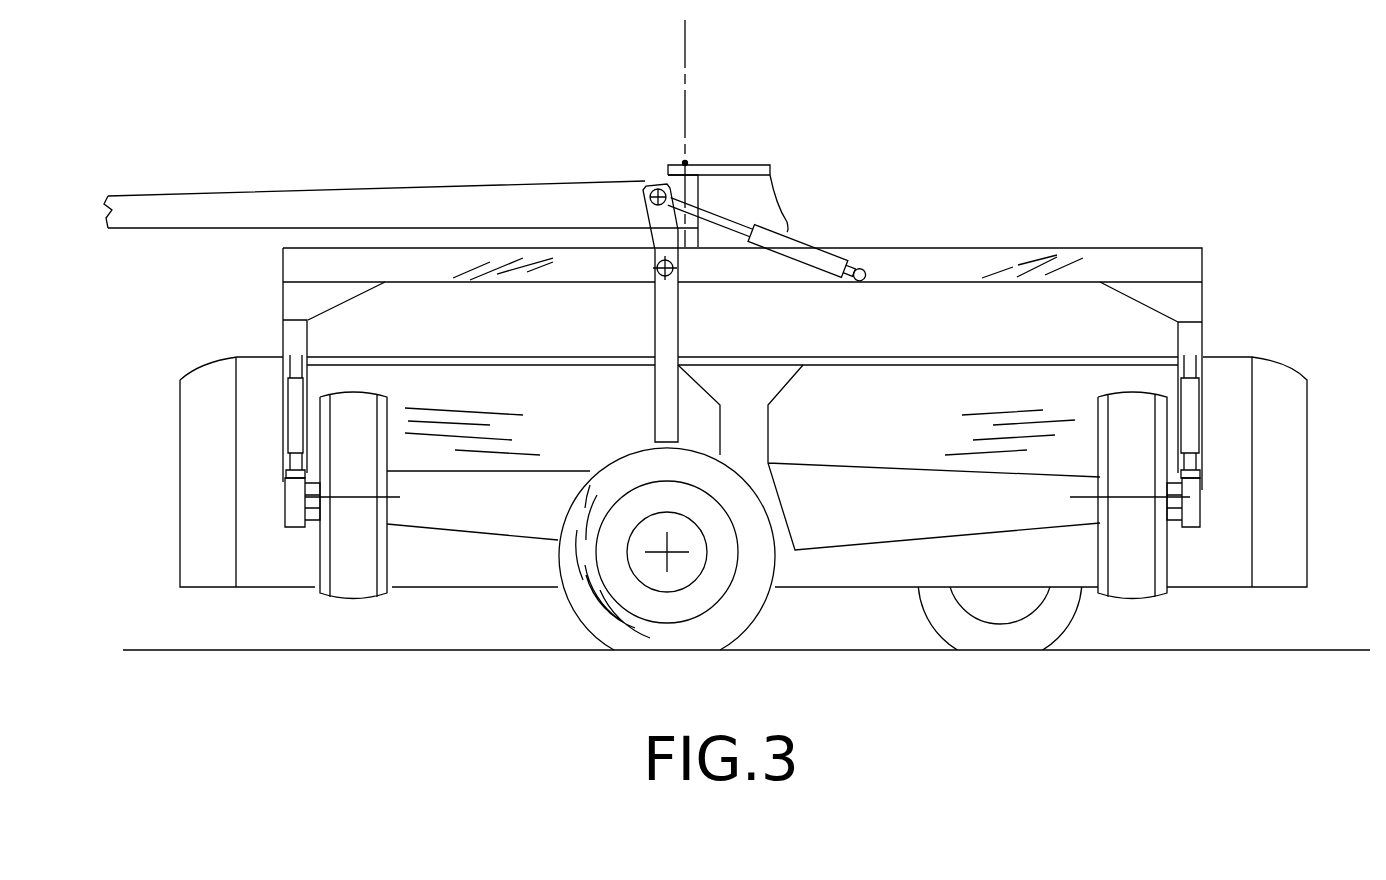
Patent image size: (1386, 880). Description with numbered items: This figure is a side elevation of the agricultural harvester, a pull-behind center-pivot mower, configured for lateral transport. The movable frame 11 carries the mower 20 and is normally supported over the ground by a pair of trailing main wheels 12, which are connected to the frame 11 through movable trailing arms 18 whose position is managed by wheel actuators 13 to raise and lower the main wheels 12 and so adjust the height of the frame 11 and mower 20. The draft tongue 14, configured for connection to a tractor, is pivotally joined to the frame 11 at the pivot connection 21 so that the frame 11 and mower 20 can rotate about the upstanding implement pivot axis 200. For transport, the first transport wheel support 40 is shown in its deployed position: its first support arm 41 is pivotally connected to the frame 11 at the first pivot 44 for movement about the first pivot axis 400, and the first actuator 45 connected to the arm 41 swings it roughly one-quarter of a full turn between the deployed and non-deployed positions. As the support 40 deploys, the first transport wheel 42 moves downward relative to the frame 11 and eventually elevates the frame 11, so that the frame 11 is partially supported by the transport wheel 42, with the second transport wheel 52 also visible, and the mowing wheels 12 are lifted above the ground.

The frame 11 is at (300, 267).
The trailing main wheels 12 is at (352, 580).
The wheel actuators 13 is at (293, 405).
The draft tongue 14 is at (420, 207).
The trailing arms 18 is at (293, 502).
The mower 20 is at (253, 596).
The pivot connection 21 is at (683, 155).
The first transport wheel support 40 is at (652, 323).
The first support arm 41 is at (665, 378).
The first transport wheel 42 is at (623, 637).
The first pivot 44 is at (681, 282).
The first actuator 45 is at (795, 243).
The second transport wheel 52 is at (993, 637).
The implement pivot axis 200 is at (683, 88).
The first pivot axis 400 is at (660, 273).